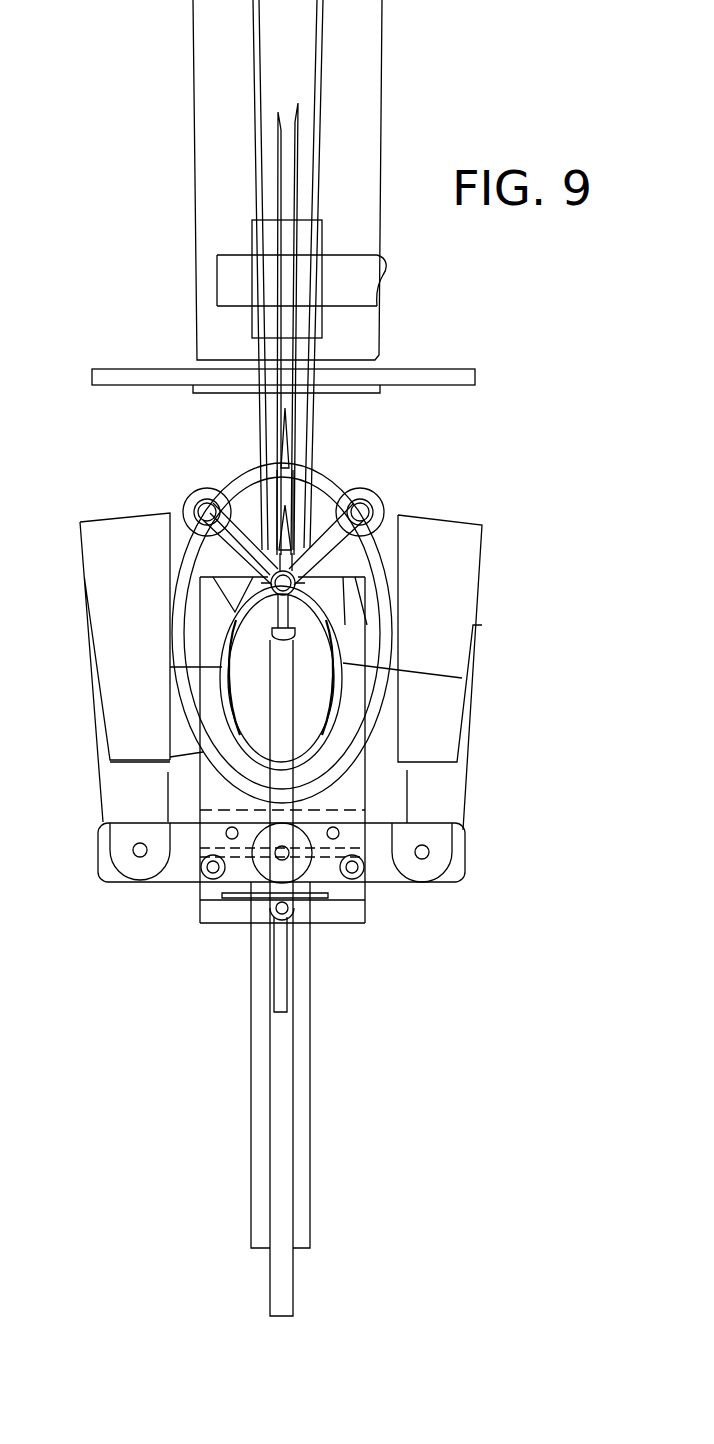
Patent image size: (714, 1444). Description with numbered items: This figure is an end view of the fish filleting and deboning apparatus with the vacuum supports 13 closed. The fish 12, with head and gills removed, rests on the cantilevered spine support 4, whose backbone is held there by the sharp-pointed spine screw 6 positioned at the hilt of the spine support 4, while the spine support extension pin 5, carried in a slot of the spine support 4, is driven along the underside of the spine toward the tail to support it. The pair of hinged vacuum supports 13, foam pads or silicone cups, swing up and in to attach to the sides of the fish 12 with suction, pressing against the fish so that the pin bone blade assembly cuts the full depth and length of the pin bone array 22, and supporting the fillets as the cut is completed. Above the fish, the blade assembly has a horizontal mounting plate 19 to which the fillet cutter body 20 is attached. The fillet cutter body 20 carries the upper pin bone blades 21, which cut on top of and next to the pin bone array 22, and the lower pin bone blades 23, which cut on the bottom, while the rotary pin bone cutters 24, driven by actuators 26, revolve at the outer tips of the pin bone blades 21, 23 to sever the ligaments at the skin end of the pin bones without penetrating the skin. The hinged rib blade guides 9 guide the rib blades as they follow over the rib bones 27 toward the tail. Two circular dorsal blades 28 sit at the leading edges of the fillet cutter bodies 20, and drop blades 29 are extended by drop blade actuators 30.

The spine support 4 is at (285, 634).
The spine support extension pin 5 is at (288, 620).
The spine screw 6 is at (305, 583).
The hinged rib blade guides 9 is at (347, 793).
The fish 12 is at (230, 773).
The vacuum supports 13 is at (80, 536).
The mounting plate 19 is at (437, 382).
The fillet cutter body 20 is at (310, 445).
The upper pin bone blades 21 is at (242, 503).
The pin bone array 22 is at (203, 568).
The lower pin bone blades 23 is at (223, 543).
The rotary pin bone cutters 24 is at (195, 498).
The actuators 26 is at (207, 488).
The rib bones 27 is at (230, 688).
The circular dorsal blades 28 is at (278, 155).
The drop blades 29 is at (273, 410).
The drop blade actuators 30 is at (242, 68).